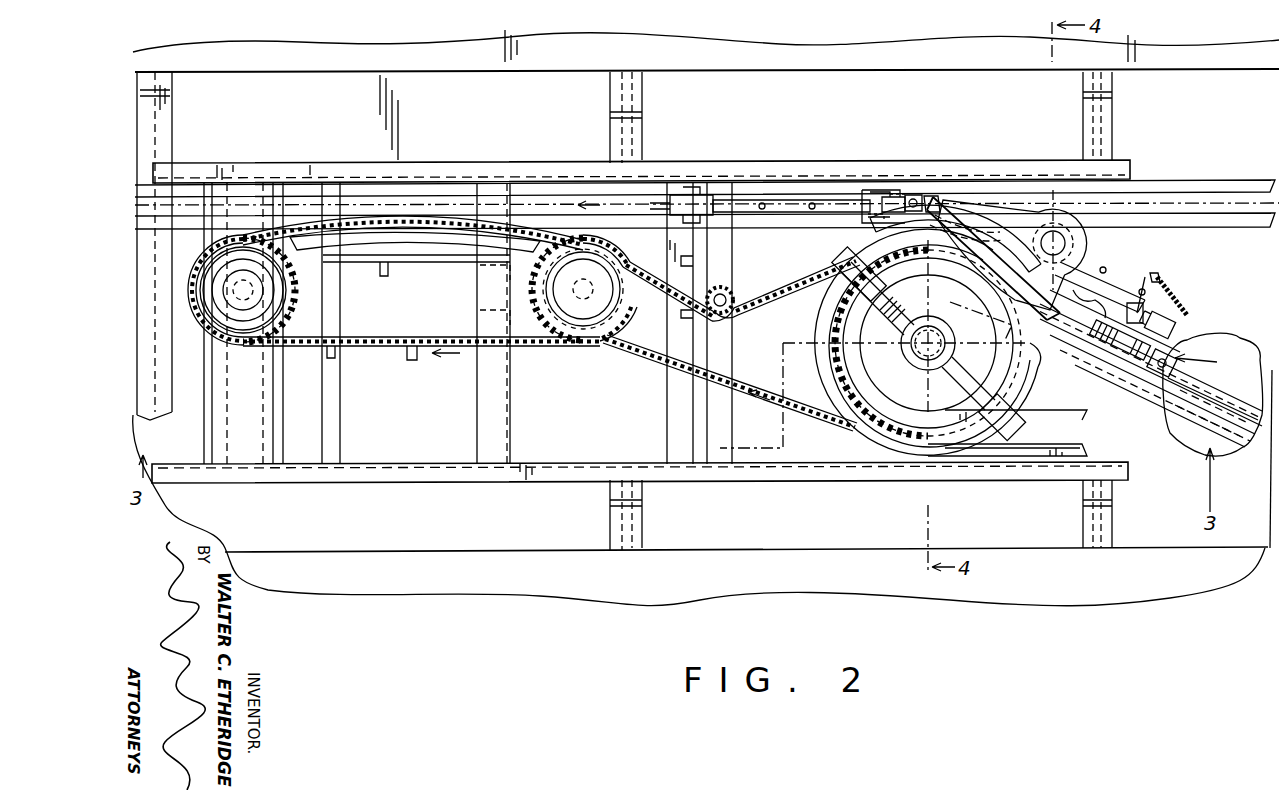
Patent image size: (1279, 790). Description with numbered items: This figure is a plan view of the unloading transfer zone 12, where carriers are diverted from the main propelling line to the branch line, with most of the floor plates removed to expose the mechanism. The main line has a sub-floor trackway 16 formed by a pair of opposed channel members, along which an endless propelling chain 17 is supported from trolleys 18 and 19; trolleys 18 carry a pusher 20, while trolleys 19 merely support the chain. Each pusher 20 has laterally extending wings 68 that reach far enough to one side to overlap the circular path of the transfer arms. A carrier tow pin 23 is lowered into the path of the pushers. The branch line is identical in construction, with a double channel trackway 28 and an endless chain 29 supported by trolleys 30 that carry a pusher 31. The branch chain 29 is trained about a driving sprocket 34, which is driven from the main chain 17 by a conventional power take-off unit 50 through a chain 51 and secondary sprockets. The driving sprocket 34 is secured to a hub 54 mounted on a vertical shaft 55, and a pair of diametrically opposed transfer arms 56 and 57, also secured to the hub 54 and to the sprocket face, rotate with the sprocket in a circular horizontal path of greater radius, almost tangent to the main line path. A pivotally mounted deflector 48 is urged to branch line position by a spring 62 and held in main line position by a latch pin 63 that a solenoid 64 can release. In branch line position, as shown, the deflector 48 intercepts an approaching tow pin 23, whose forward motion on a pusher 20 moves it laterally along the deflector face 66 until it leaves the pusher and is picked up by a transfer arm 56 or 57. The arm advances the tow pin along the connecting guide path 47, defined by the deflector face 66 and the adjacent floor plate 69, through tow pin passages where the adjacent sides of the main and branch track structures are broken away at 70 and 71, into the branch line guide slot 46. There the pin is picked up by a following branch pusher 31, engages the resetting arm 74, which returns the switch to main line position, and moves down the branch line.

The unloading transfer zone 12 is at (468, 152).
The sub-floor trackway 16 is at (1213, 181).
The endless propelling chain 17 is at (786, 198).
The trolley 18 is at (883, 192).
The trolley 19 is at (693, 200).
The pusher 20 is at (908, 195).
The tow pin 23 is at (935, 197).
The double channel trackway 28 is at (1151, 358).
The endless chain 29 is at (1108, 352).
The trolley 30 is at (1130, 357).
The pusher 31 is at (1170, 358).
The driving sprocket 34 is at (832, 332).
The branch line guide slot 46 is at (1245, 446).
The connecting guide path 47 is at (988, 226).
The deflector 48 is at (1104, 256).
The power take-off unit 50 is at (372, 352).
The chain 51 is at (618, 352).
The hub 54 is at (952, 348).
The vertical shaft 55 is at (920, 350).
The transfer arm 56 is at (1008, 410).
The transfer arm 57 is at (833, 258).
The spring 62 is at (1174, 297).
The latch pin 63 is at (1160, 313).
The solenoid 64 is at (1176, 327).
The deflector face 66 is at (996, 244).
The wings 68 is at (878, 198).
The floor plate 69 is at (1222, 373).
The tow pin passage 70 is at (955, 212).
The tow pin passage 71 is at (1040, 347).
The resetting arm 74 is at (1122, 300).